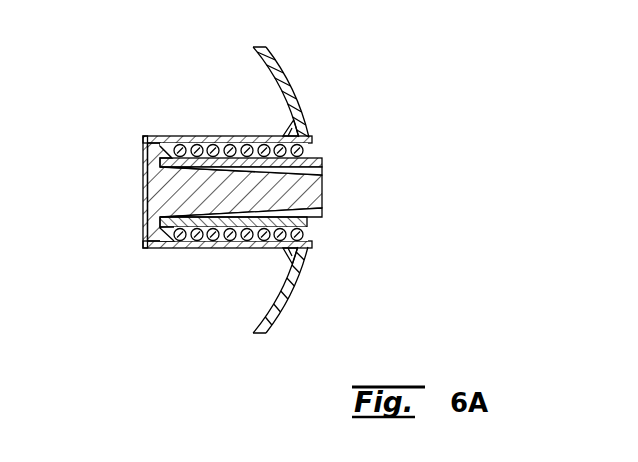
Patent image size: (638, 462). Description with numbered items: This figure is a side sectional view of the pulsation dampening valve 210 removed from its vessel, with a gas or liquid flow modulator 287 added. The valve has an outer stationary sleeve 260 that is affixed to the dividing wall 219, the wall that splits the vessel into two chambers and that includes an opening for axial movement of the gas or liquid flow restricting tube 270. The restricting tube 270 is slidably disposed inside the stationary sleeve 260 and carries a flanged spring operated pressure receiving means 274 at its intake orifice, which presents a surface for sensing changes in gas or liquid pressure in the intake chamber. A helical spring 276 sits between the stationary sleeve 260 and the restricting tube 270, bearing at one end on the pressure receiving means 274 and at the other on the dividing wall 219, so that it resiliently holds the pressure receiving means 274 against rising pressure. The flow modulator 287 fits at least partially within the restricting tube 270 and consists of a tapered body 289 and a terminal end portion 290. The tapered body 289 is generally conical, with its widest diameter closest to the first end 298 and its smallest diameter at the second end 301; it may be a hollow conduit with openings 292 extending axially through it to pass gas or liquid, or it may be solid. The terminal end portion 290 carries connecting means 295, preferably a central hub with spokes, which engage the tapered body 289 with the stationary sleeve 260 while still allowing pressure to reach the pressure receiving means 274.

The pulsation dampening valve 210 is at (104, 108).
The dividing wall 219 is at (290, 96).
The outer stationary sleeve 260 is at (188, 136).
The gas or liquid flow restricting tube 270 is at (323, 222).
The spring operated pressure receiving means 274 is at (165, 243).
The helical spring 276 is at (212, 241).
The gas or liquid flow modulator 287 is at (130, 215).
The tapered body 289 is at (258, 143).
The terminal end portion 290 is at (143, 232).
The openings 292 is at (143, 196).
The connecting means 295 is at (149, 135).
The first end 298 is at (143, 162).
The second end 301 is at (323, 173).